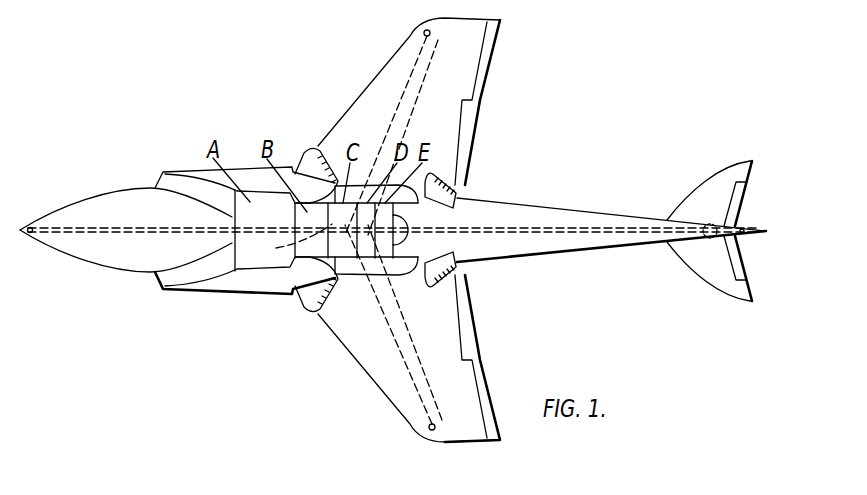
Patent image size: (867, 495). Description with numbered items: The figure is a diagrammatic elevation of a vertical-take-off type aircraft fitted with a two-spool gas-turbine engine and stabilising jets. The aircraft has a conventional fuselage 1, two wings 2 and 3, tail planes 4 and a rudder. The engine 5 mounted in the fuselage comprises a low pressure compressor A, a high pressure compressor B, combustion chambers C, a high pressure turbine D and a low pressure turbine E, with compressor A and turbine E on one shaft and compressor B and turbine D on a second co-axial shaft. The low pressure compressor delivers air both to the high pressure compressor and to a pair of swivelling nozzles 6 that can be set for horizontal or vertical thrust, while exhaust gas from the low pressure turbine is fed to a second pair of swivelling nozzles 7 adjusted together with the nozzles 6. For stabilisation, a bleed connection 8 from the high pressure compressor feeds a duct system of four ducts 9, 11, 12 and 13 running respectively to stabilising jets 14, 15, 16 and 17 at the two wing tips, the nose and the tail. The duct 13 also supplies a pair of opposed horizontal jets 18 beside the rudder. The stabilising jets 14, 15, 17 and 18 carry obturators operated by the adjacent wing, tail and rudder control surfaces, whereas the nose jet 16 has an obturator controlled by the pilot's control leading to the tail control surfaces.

The fuselage 1 is at (548, 206).
The wing 2 is at (472, 40).
The wing 3 is at (460, 392).
The tail planes 4 is at (704, 188).
The engine 5 is at (280, 300).
The swivelling nozzles 6 is at (319, 150).
The swivelling nozzles 7 is at (457, 193).
The bleed connection 8 is at (297, 242).
The duct 9 is at (405, 368).
The duct 11 is at (404, 88).
The duct 12 is at (110, 224).
The duct 13 is at (595, 232).
The stabilising jet 14 is at (428, 427).
The stabilising jet 15 is at (424, 33).
The nose jet 16 is at (31, 226).
The stabilising jet 17 is at (742, 230).
The opposed horizontal jets 18 is at (706, 222).